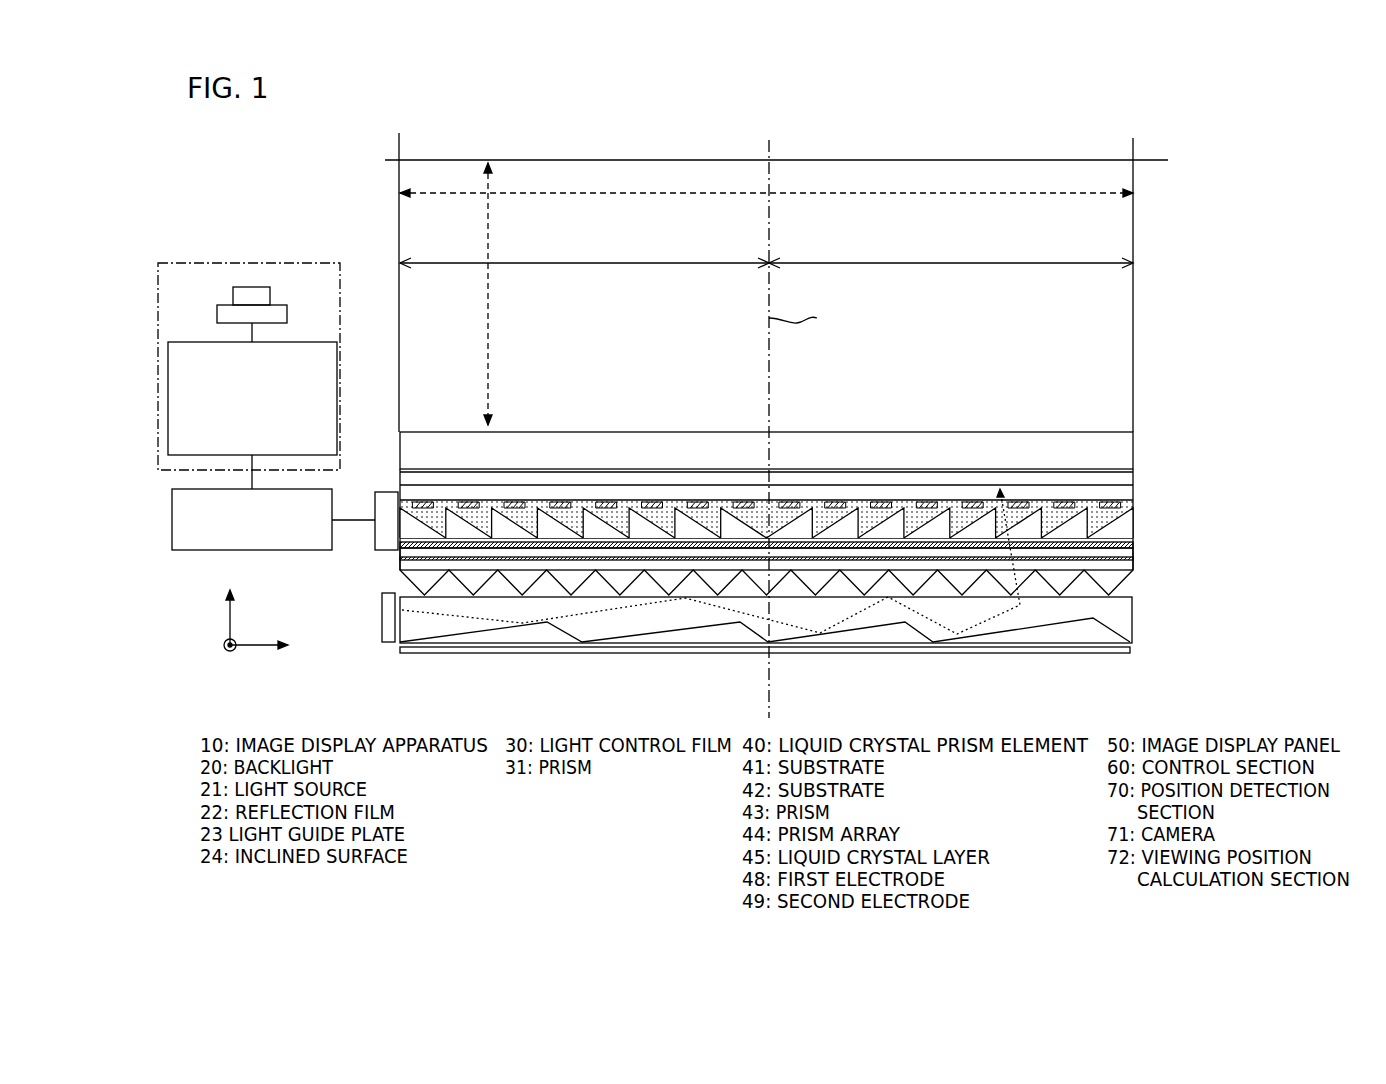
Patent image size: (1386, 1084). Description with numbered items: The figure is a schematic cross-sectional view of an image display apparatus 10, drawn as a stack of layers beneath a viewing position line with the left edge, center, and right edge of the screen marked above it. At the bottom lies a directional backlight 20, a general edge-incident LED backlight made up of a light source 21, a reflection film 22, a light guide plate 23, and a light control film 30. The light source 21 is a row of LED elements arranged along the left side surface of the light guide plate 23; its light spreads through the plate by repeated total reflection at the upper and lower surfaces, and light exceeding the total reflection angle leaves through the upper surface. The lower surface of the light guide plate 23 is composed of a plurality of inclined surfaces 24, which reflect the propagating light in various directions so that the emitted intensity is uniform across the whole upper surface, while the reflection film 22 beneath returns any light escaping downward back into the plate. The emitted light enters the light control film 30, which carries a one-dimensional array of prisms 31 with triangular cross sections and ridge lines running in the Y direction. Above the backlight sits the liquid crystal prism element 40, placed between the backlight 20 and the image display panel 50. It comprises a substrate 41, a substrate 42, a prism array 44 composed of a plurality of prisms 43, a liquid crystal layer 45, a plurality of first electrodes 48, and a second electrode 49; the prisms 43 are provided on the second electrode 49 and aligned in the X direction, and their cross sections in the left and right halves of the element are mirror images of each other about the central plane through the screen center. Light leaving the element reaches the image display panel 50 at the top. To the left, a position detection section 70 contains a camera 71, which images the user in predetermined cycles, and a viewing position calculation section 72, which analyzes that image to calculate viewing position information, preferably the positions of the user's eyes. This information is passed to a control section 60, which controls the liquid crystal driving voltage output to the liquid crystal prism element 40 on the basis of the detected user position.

The image display apparatus 10 is at (1248, 132).
The directional backlight 20 is at (1255, 578).
The light source 21 is at (388, 640).
The reflection film 22 is at (947, 653).
The light guide plate 23 is at (1115, 618).
The inclined surfaces 24 is at (467, 633).
The light control film 30 is at (825, 591).
The prisms 31 is at (1112, 583).
The liquid crystal prism element 40 is at (1248, 437).
The substrate 41 is at (1133, 493).
The substrate 42 is at (1133, 552).
The prisms 43 is at (1133, 525).
The prism array 44 is at (831, 514).
The liquid crystal layer 45 is at (1133, 503).
The first electrodes 48 is at (927, 502).
The second electrode 49 is at (1133, 542).
The image display panel 50 is at (1133, 448).
The control section 60 is at (285, 519).
The position detection section 70 is at (180, 263).
The camera 71 is at (277, 302).
The viewing position calculation section 72 is at (252, 398).